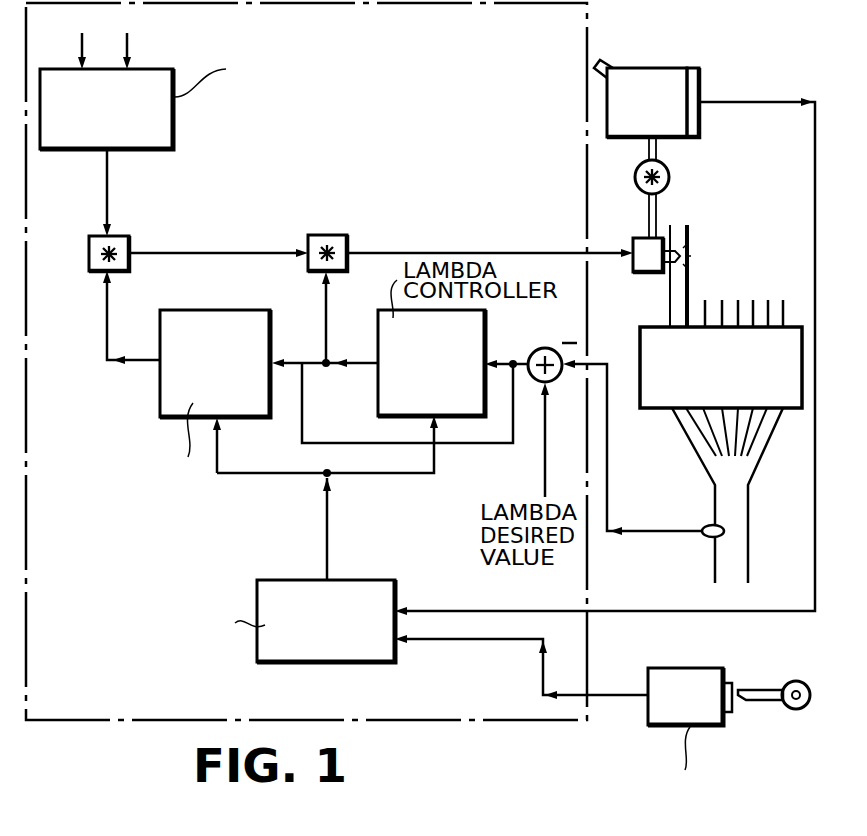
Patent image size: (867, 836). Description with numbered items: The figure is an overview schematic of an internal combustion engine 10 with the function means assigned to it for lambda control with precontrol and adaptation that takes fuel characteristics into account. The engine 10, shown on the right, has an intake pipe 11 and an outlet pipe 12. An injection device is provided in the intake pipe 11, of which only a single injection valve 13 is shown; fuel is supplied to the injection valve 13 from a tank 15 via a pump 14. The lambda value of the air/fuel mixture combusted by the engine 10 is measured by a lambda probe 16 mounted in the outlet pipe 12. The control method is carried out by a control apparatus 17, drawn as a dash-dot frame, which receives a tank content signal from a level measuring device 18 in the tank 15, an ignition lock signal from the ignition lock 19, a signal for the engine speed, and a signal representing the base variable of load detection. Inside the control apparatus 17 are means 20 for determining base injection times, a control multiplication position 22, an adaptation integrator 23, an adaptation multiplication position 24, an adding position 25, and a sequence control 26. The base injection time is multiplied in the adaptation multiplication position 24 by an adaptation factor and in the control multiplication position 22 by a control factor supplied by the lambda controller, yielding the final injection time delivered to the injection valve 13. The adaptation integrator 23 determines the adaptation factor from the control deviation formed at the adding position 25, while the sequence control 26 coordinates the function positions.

The internal combustion engine 10 is at (640, 358).
The intake pipe 11 is at (690, 277).
The outlet pipe 12 is at (751, 545).
The injection valve 13 is at (644, 277).
The pump 14 is at (671, 177).
The tank 15 is at (667, 68).
The lambda probe 16 is at (712, 540).
The control apparatus 17 is at (590, 663).
The level measuring device 18 is at (698, 86).
The ignition lock 19 is at (683, 668).
The means for determining base injection times 20 is at (175, 132).
The control multiplication position 22 is at (347, 245).
The adaptation integrator 23 is at (168, 380).
The adaptation multiplication position 24 is at (129, 238).
The adding position 25 is at (552, 348).
The sequence control 26 is at (325, 665).